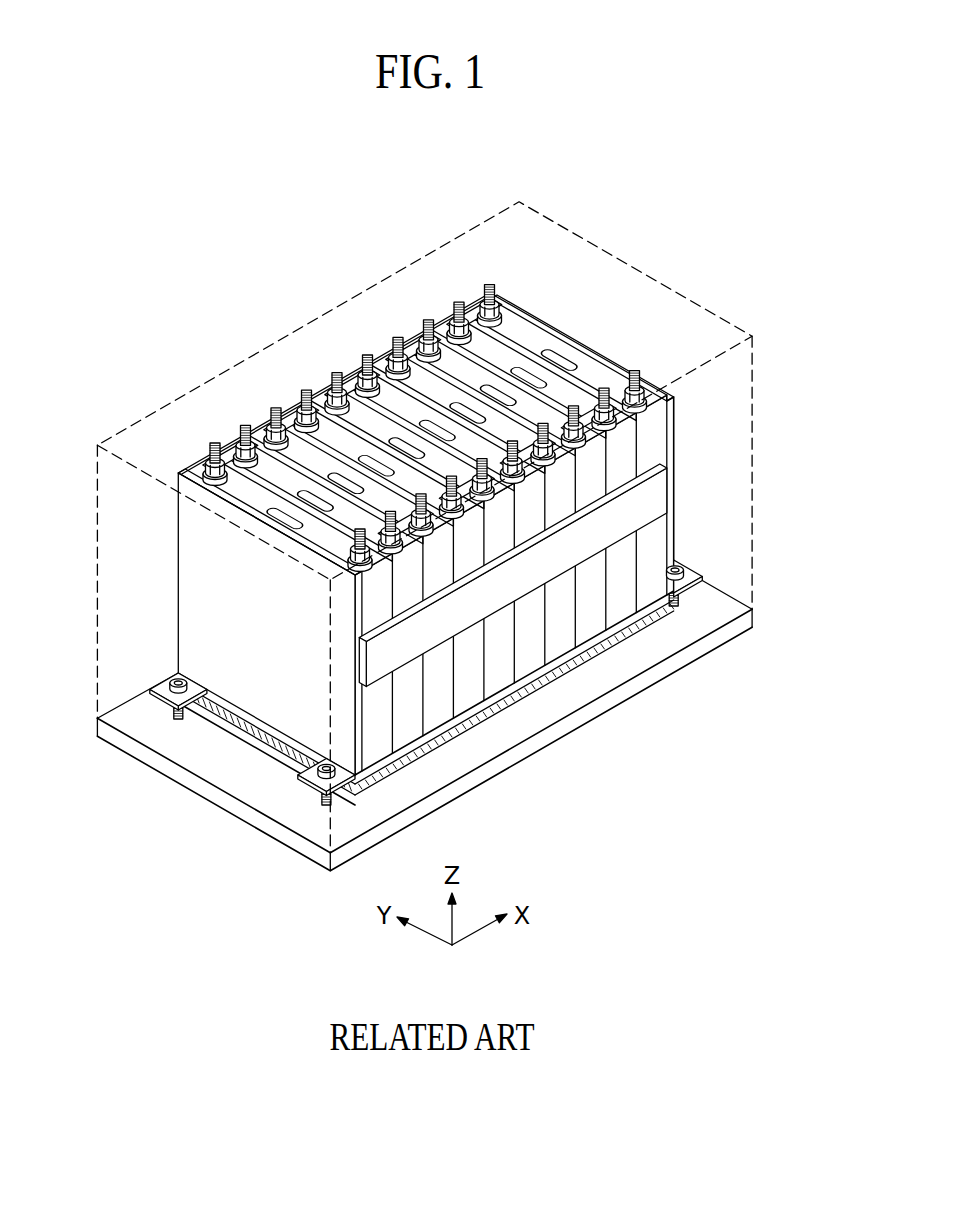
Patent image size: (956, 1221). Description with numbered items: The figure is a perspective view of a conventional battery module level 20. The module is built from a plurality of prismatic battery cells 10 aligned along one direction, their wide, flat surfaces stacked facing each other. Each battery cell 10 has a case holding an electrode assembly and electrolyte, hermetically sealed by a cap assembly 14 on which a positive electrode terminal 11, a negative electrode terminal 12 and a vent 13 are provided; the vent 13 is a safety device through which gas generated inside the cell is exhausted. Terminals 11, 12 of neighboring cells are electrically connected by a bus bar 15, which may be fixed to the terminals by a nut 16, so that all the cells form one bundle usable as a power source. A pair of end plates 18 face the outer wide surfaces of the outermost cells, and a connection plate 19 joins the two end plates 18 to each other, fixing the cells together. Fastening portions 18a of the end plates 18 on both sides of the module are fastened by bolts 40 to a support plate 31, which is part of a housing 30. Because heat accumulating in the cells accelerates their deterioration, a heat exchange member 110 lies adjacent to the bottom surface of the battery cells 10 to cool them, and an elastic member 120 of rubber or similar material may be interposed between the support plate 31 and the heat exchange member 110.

The battery cell 10 is at (465, 517).
The positive electrode terminal 11 is at (490, 282).
The negative electrode terminal 12 is at (636, 370).
The vent 13 is at (557, 358).
The cap assembly 14 is at (588, 372).
The bus bar 15 is at (229, 455).
The nut 16 is at (204, 462).
The end plate 18 is at (183, 598).
The fastening portion 18a is at (308, 770).
The connection plate 19 is at (655, 498).
The battery module level 20 is at (404, 404).
The housing 30 is at (425, 243).
The support plate 31 is at (607, 705).
The bolt 40 is at (181, 716).
The heat exchange member 110 is at (467, 722).
The elastic member 120 is at (522, 705).